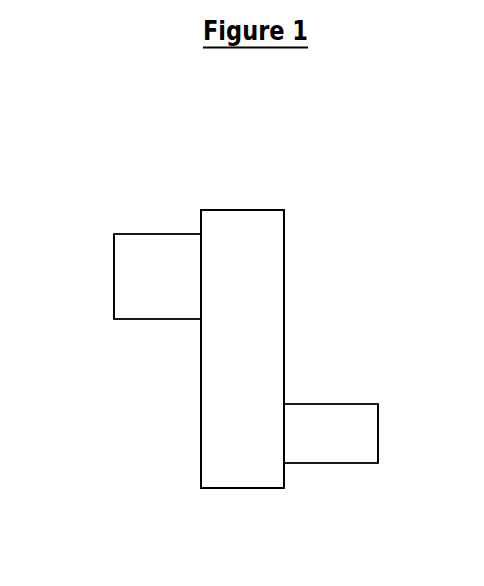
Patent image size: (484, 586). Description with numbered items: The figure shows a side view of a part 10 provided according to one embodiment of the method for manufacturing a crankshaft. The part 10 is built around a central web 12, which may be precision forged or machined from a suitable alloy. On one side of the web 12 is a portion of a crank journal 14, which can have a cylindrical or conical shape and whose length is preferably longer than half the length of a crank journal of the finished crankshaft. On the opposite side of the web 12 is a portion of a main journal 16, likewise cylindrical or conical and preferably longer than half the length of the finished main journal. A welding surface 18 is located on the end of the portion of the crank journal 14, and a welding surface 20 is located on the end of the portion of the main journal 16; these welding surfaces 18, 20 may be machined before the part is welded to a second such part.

The part 10 is at (312, 208).
The web 12 is at (284, 331).
The portion of a crank journal 14 is at (330, 463).
The portion of a main journal 16 is at (138, 319).
The welding surface 18 is at (378, 427).
The welding surface 20 is at (113, 270).